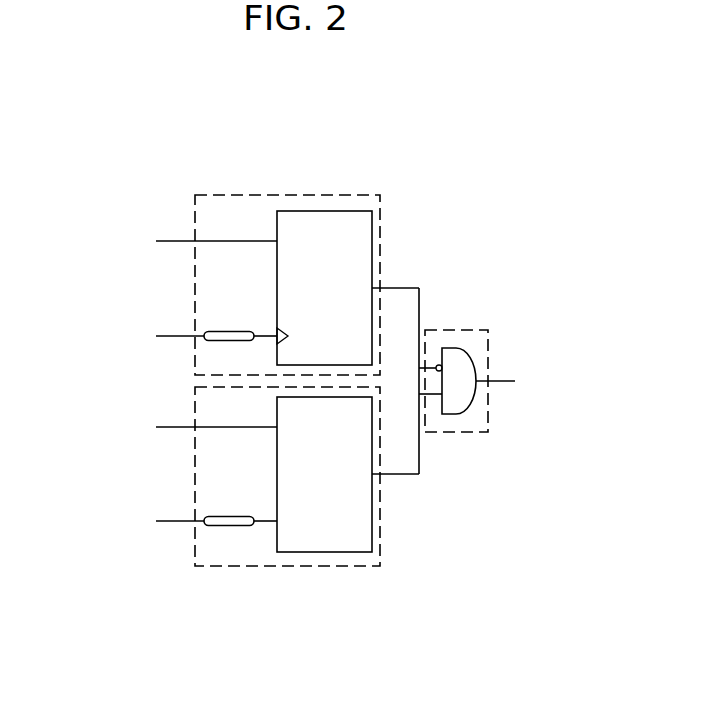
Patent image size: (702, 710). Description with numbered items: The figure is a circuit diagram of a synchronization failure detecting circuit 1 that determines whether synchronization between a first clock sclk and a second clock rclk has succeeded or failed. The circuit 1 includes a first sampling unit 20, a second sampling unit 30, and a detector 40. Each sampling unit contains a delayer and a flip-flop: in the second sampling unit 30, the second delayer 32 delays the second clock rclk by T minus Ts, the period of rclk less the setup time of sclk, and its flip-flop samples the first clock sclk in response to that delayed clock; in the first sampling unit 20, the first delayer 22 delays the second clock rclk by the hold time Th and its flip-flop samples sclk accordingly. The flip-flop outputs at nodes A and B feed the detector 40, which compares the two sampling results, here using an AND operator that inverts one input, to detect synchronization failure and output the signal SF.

The synchronization failure detecting circuit 1 is at (412, 180).
The second sampling unit 30 is at (213, 196).
The second delayer 32 is at (223, 342).
The first sampling unit 20 is at (367, 566).
The first delayer 22 is at (222, 528).
The detector 40 is at (478, 330).